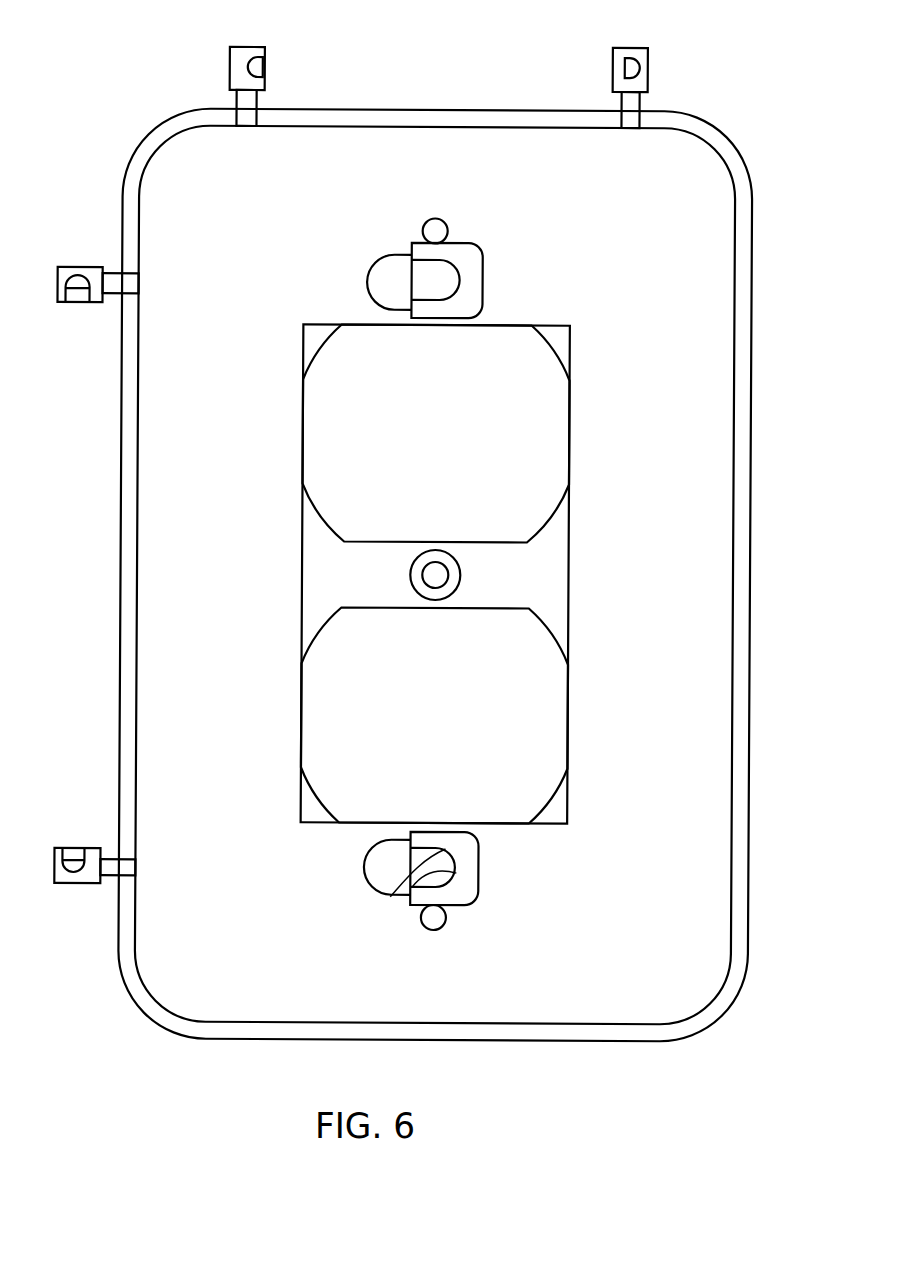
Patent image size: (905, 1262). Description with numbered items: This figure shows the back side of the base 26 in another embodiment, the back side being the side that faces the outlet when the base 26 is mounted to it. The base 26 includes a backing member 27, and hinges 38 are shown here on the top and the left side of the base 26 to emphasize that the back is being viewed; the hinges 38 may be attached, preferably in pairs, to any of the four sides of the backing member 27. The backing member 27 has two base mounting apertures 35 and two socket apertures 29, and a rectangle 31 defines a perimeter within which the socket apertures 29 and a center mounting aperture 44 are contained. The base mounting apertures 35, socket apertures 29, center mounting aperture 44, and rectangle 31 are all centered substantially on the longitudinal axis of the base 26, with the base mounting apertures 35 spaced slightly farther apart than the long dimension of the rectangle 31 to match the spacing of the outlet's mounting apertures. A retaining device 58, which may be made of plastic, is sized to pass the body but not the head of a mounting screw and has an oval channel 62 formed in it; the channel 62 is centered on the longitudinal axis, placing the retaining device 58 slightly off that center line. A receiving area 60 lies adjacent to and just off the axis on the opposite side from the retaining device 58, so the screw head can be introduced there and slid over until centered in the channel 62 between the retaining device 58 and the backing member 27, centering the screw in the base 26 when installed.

The base 26 is at (476, 98).
The backing member 27 is at (233, 571).
The socket apertures 29 is at (415, 733).
The rectangle 31 is at (569, 516).
The base mounting apertures 35 is at (425, 277).
The hinges 38 is at (65, 885).
The center mounting aperture 44 is at (435, 575).
The retaining device 58 is at (470, 262).
The receiving area 60 is at (383, 273).
The channel 62 is at (420, 851).